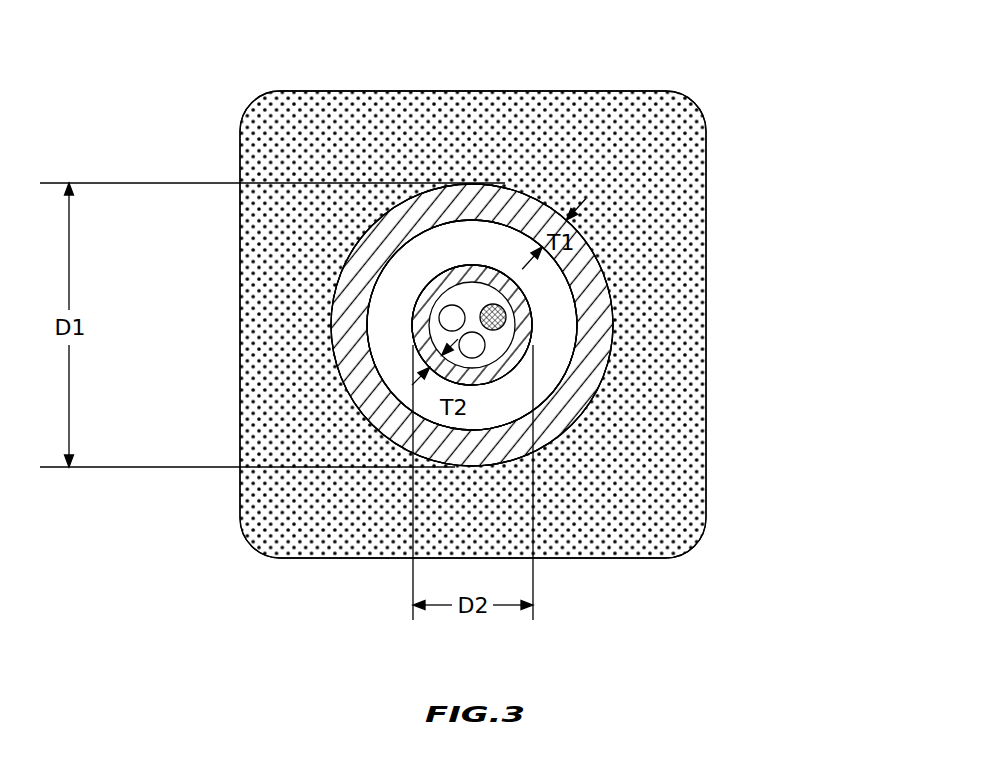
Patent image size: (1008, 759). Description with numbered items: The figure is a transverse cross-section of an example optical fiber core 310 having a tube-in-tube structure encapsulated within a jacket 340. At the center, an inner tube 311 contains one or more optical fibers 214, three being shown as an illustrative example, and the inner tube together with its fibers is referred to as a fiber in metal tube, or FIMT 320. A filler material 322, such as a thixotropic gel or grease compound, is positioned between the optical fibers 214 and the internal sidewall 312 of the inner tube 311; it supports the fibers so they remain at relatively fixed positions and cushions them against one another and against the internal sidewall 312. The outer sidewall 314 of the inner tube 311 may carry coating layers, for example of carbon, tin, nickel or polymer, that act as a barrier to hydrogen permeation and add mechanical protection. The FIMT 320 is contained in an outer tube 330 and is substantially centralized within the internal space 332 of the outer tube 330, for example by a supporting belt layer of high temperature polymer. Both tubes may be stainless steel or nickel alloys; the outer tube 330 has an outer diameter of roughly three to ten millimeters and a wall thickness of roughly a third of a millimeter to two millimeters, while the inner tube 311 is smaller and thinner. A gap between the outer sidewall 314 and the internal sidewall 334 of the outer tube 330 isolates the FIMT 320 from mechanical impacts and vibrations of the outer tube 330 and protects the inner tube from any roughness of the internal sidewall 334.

The optical fiber core 310 is at (645, 66).
The jacket 340 is at (647, 153).
The outer tube 330 is at (562, 422).
The internal sidewall of the outer tube 334 is at (561, 290).
The internal space of the outer tube 332 is at (548, 322).
The inner tube 311 is at (548, 375).
The fiber in metal tube (FIMT) 320 is at (506, 234).
The filler material 322 is at (468, 296).
The outer sidewall of the inner tube 314 is at (410, 326).
The optical fibers 214 is at (452, 318).
The internal sidewall of the inner tube 312 is at (486, 345).